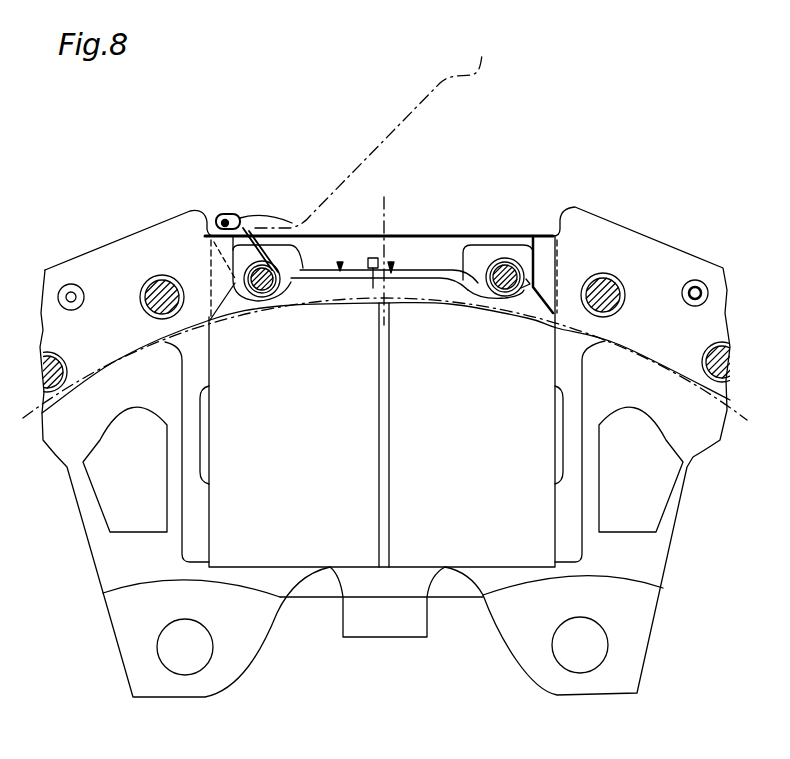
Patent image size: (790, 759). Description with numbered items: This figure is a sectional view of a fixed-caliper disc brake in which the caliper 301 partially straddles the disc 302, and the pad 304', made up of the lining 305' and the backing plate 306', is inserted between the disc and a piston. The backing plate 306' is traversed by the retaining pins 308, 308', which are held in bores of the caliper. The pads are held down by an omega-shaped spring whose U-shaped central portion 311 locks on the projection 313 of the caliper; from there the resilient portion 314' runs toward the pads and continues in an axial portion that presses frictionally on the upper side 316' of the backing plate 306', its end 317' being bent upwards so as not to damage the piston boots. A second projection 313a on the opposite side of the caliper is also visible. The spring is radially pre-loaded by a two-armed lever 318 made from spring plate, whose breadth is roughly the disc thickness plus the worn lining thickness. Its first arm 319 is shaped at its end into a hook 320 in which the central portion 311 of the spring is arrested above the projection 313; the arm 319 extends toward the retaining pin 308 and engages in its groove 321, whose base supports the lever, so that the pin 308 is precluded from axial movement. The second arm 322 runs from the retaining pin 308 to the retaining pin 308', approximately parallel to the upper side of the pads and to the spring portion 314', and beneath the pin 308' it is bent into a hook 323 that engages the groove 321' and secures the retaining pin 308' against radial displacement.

The caliper 301 is at (140, 249).
The disc 302 is at (610, 341).
The pad 304' is at (381, 608).
The lining 305' is at (382, 401).
The backing plate 306' is at (475, 215).
The retaining pin 308 is at (259, 299).
The retaining pin 308' is at (493, 232).
The central portion of the spring 311 is at (231, 212).
The projection 313 is at (256, 222).
The retaining wire end 313a is at (545, 260).
The resilient portion of the spring 314' is at (327, 232).
The upper side of the backing plate 316' is at (392, 250).
The end of the spring portion 317' is at (368, 156).
The lever 318 is at (339, 262).
The first arm 319 is at (260, 220).
The hook 320 is at (236, 210).
The groove 321 is at (276, 309).
The groove 321' is at (516, 314).
The second arm 322 is at (415, 283).
The hook 323 is at (503, 293).